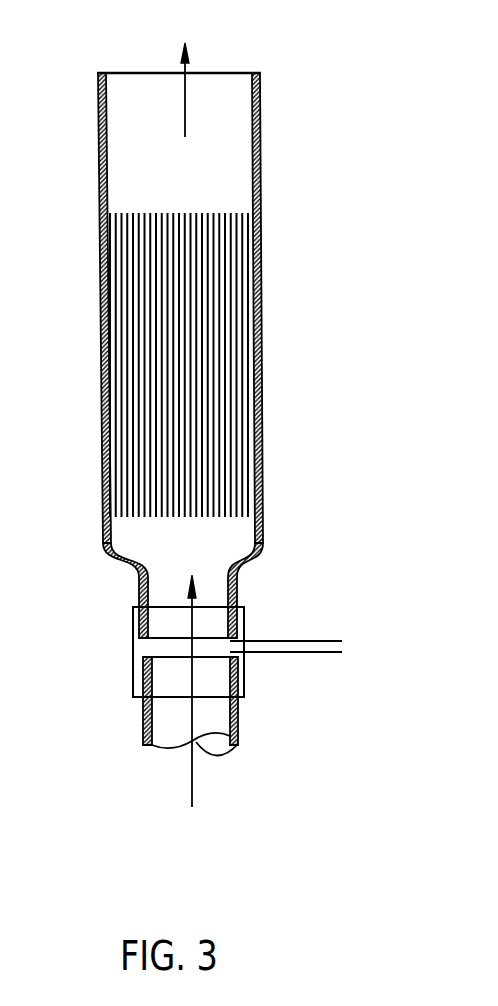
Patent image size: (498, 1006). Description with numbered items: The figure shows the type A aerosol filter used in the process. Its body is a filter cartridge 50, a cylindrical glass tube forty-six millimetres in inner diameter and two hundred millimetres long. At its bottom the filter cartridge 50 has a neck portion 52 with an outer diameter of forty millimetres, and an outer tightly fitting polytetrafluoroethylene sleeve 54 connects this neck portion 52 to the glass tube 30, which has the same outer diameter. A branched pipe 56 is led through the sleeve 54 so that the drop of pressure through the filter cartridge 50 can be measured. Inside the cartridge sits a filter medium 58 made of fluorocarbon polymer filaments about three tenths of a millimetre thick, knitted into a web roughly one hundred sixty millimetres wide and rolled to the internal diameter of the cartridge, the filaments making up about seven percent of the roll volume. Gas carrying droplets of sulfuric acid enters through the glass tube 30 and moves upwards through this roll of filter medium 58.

The filter cartridge 50 is at (258, 187).
The filter medium 58 is at (222, 385).
The neck portion 52 is at (235, 593).
The polytetrafluoroethylene sleeve 54 is at (132, 617).
The branched pipe 56 is at (305, 647).
The glass tube 30 is at (238, 727).